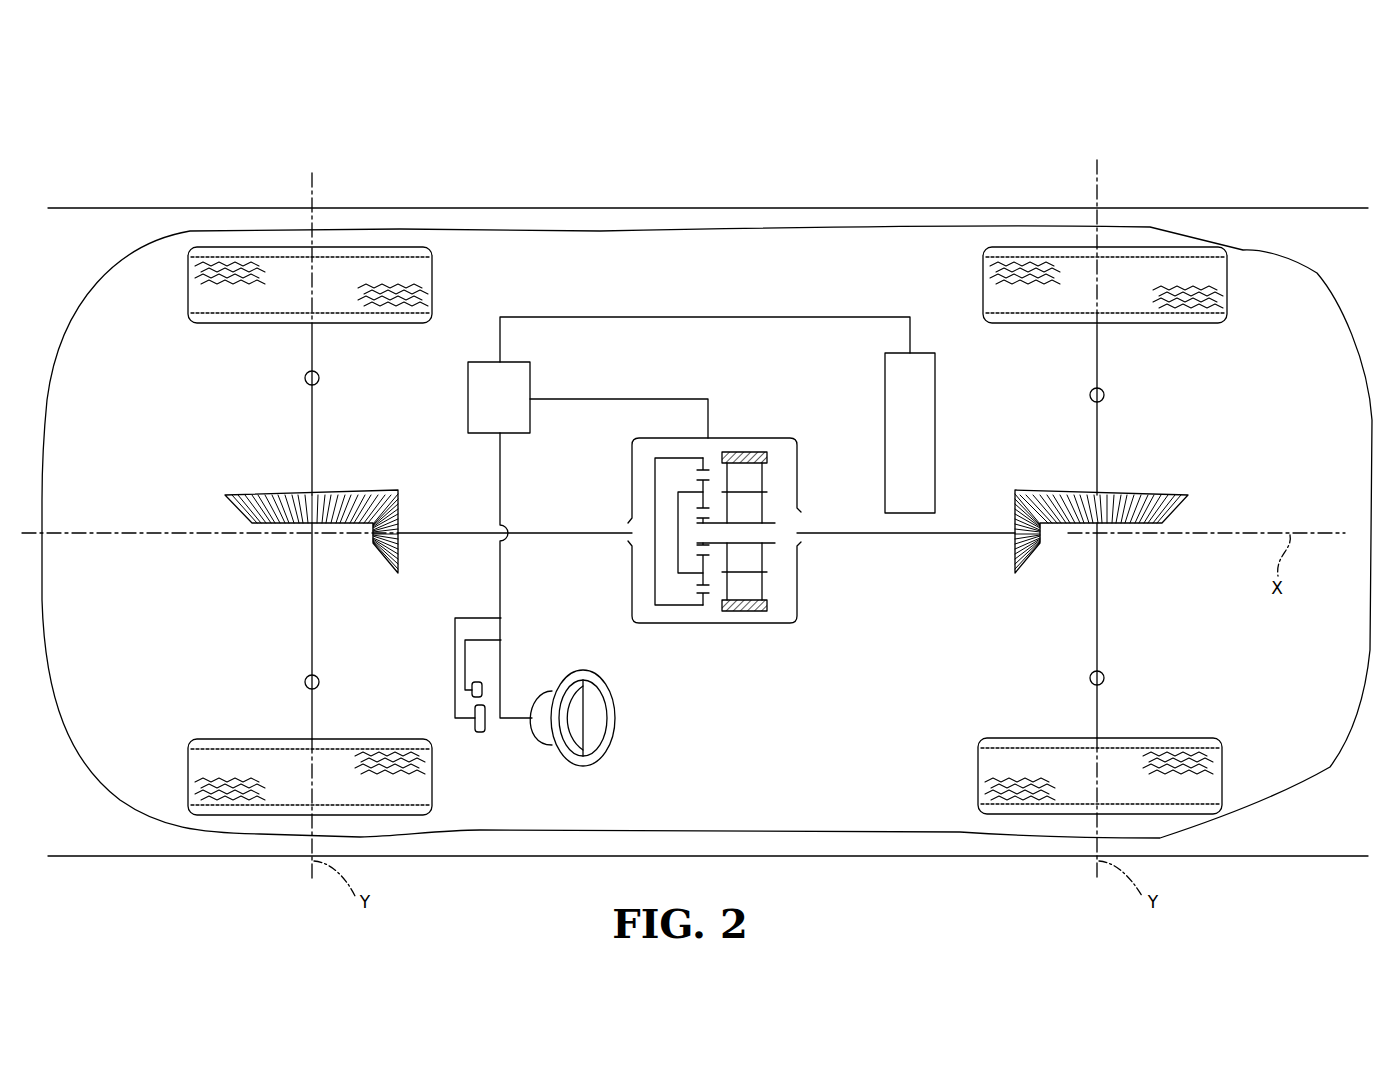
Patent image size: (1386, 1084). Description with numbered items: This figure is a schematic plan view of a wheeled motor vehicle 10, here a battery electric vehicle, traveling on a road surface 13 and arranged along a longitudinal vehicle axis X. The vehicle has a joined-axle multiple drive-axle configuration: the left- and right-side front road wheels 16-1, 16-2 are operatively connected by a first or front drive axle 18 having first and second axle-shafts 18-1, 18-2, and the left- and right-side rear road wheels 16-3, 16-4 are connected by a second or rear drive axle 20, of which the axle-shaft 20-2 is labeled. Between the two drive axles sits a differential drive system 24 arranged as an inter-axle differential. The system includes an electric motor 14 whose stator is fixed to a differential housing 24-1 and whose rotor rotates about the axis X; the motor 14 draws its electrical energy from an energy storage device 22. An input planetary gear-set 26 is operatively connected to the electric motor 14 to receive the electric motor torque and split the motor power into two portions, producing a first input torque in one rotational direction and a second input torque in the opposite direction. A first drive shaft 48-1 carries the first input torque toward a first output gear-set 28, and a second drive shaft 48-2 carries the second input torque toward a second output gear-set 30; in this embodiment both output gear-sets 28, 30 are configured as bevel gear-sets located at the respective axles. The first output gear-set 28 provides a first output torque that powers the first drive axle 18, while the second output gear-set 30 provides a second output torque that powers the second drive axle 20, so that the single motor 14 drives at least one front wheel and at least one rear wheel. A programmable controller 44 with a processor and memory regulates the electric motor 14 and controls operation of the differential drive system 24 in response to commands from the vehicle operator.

The motor vehicle 10 is at (1283, 115).
The road surface 13 is at (79, 249).
The electric motor 14 is at (766, 447).
The left-side front road wheel 16-1 is at (246, 798).
The right-side front road wheel 16-2 is at (268, 265).
The left-side rear road wheel 16-3 is at (1050, 793).
The right-side rear road wheel 16-4 is at (1045, 268).
The first drive axle 18 is at (289, 531).
The first axle-shaft of the first drive axle 18-1 is at (314, 658).
The second axle-shaft of the first drive axle 18-2 is at (311, 420).
The second drive axle 20 is at (1074, 531).
The second axle-shaft of the second drive axle 20-2 is at (1099, 432).
The energy storage device 22 is at (899, 439).
The differential drive system 24 is at (740, 310).
The differential housing 24-1 is at (734, 542).
The input planetary gear-set 26 is at (657, 618).
The first output gear-set 28 is at (345, 550).
The second output gear-set 30 is at (1060, 548).
The programmable controller 44 is at (489, 407).
The first drive shaft 48-1 is at (545, 532).
The second drive shaft 48-2 is at (890, 536).